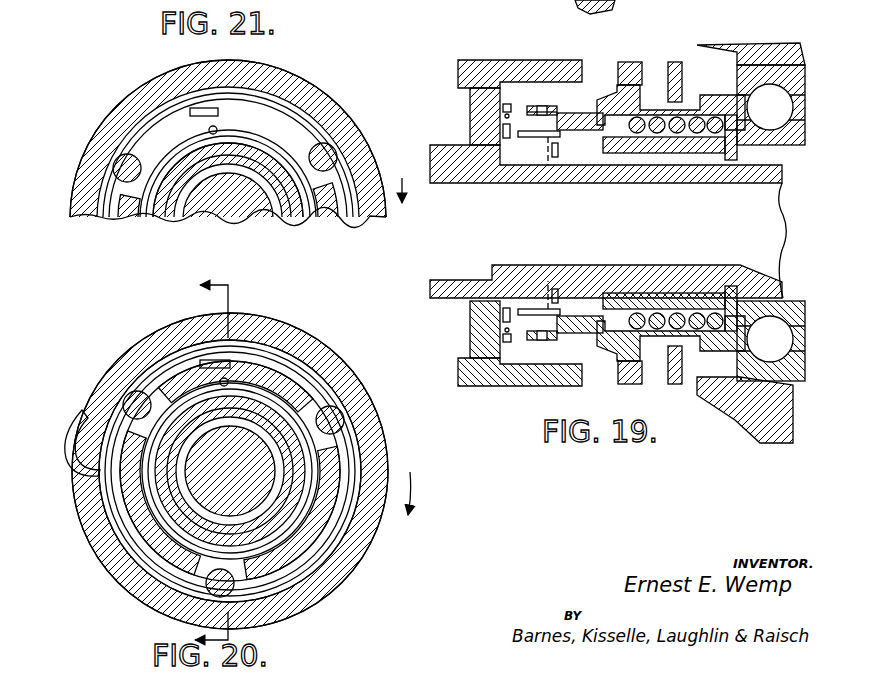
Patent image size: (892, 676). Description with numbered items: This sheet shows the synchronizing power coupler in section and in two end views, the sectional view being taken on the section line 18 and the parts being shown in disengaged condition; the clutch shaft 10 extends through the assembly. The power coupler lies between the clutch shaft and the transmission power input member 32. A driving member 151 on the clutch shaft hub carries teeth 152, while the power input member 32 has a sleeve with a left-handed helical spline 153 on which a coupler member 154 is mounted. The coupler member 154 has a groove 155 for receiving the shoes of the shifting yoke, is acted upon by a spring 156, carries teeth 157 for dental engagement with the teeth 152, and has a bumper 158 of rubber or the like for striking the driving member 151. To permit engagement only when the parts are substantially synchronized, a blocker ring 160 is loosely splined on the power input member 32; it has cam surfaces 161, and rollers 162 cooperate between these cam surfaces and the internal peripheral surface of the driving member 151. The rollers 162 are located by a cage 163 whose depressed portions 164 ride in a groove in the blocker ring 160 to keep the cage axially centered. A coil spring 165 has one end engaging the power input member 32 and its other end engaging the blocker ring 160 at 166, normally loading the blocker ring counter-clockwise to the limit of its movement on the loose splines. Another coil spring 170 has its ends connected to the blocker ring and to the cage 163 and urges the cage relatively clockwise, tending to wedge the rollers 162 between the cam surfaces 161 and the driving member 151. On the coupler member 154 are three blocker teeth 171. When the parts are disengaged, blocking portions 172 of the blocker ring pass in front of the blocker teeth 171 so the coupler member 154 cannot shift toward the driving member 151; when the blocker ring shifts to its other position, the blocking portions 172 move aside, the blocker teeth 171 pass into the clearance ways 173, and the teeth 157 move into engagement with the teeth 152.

In FIG. 21, the shaft 10 is at (228, 218).
In FIG. 20, the shaft 10 is at (230, 471).
In FIG. 19, the shaft 10 is at (785, 232).
In FIG. 20, the section line 18 is at (228, 465).
In FIG. 20, the transmission power input member 32 is at (282, 457).
In FIG. 19, the transmission power input member 32 is at (720, 160).
In FIG. 21, the driving member 151 is at (218, 72).
In FIG. 20, the driving member 151 is at (323, 337).
In FIG. 19, the driving member 151 is at (544, 60).
In FIG. 19, the teeth 152 is at (593, 95).
In FIG. 19, the helical spline 153 is at (666, 160).
In FIG. 19, the coupler member 154 is at (615, 153).
In FIG. 19, the groove 155 is at (652, 72).
In FIG. 19, the spring 156 is at (683, 115).
In FIG. 19, the teeth 157 is at (614, 372).
In FIG. 19, the bumper 158 is at (626, 385).
In FIG. 20, the blocker ring 160 is at (340, 563).
In FIG. 20, the cam surfaces 161 is at (350, 368).
In FIG. 21, the rollers 162 is at (355, 127).
In FIG. 20, the rollers 162 is at (372, 398).
In FIG. 21, the cage 163 is at (360, 153).
In FIG. 20, the cage 163 is at (248, 368).
In FIG. 19, the cage 163 is at (553, 107).
In FIG. 20, the depressed portions 164 is at (66, 448).
In FIG. 19, the depressed portions 164 is at (545, 106).
In FIG. 19, the coil spring 165 is at (560, 150).
In FIG. 21, the spring end engagement 166 is at (212, 126).
In FIG. 20, the spring end engagement 166 is at (226, 378).
In FIG. 19, the spring end engagement 166 is at (527, 136).
In FIG. 19, the coil spring 170 is at (505, 125).
In FIG. 21, the blocker teeth 171 is at (158, 150).
In FIG. 20, the blocker teeth 171 is at (178, 398).
In FIG. 19, the blocker teeth 171 is at (580, 128).
In FIG. 21, the blocking portions 172 is at (290, 71).
In FIG. 20, the blocking portions 172 is at (84, 527).
In FIG. 21, the clearance ways 173 is at (142, 150).
In FIG. 20, the clearance ways 173 is at (165, 592).